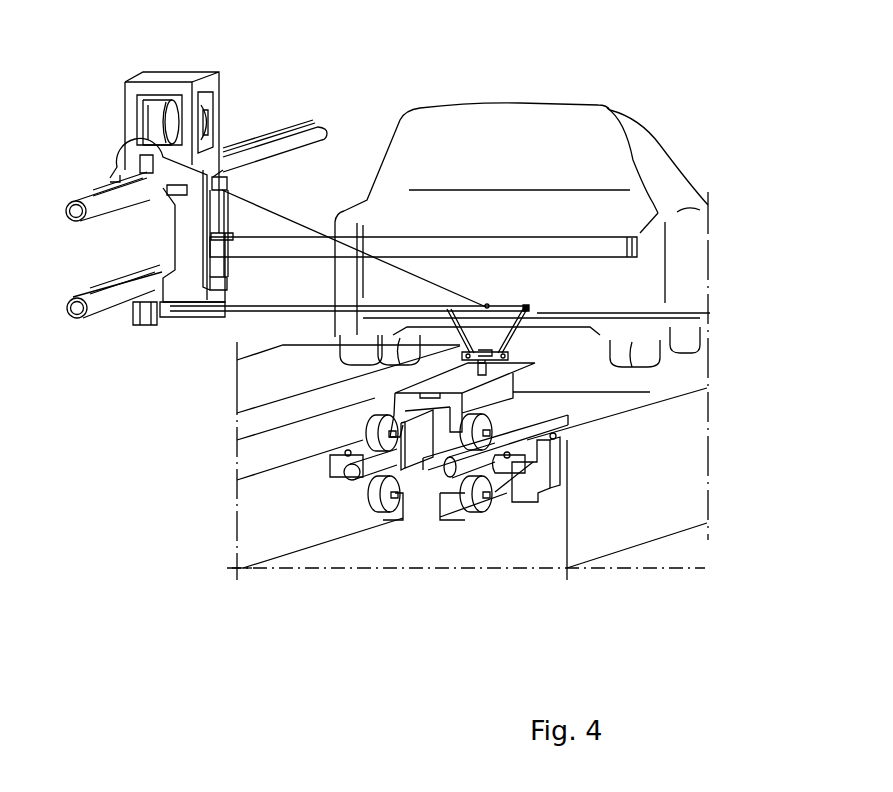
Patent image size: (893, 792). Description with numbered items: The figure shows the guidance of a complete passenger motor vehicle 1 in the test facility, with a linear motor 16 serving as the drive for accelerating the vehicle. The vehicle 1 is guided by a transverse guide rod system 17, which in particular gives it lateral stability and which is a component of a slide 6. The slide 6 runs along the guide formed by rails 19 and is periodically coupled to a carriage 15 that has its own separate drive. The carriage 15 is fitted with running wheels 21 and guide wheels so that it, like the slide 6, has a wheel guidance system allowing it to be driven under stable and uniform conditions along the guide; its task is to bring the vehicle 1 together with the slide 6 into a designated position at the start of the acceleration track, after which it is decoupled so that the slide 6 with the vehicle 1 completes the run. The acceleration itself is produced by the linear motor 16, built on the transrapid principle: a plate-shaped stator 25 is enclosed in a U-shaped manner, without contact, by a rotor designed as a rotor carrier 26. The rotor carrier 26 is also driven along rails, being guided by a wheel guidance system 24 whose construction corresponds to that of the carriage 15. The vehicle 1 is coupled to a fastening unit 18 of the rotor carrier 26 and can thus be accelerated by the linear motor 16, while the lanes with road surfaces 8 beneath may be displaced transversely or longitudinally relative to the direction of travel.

The vehicle 1 is at (623, 153).
The slide 6 is at (190, 242).
The road surface 8 is at (267, 365).
The carriage 15 is at (128, 92).
The linear motor 16 is at (425, 482).
The transverse guide rod system 17 is at (363, 258).
The fastening unit 18 is at (513, 343).
The rails 19 is at (96, 200).
The running wheels 21 is at (155, 123).
The wheel guidance system 24 is at (497, 508).
The stator 25 is at (410, 473).
The rotor carrier 26 is at (513, 400).